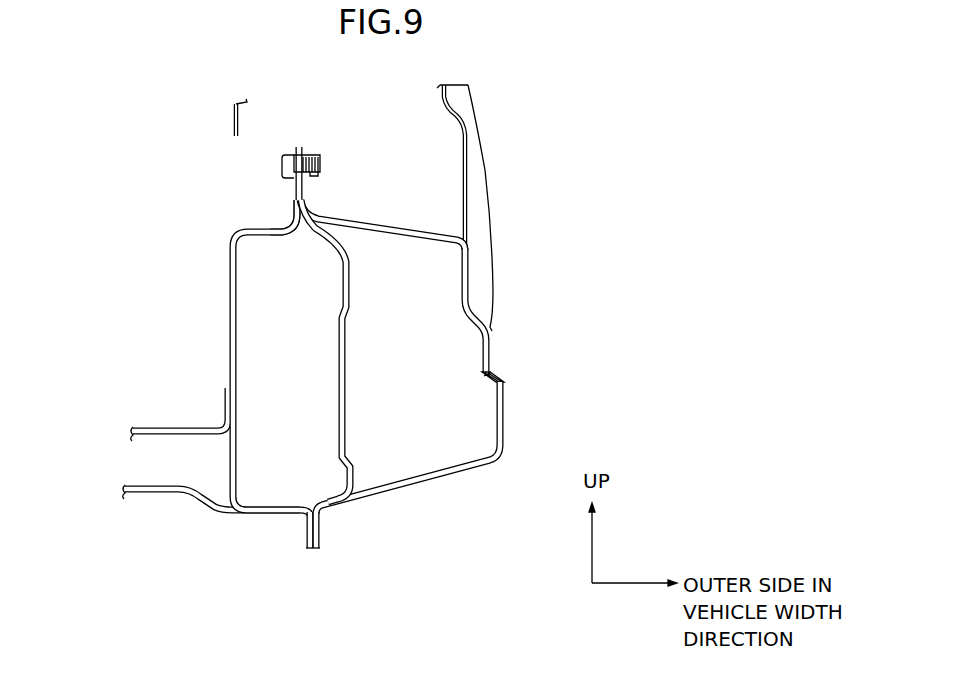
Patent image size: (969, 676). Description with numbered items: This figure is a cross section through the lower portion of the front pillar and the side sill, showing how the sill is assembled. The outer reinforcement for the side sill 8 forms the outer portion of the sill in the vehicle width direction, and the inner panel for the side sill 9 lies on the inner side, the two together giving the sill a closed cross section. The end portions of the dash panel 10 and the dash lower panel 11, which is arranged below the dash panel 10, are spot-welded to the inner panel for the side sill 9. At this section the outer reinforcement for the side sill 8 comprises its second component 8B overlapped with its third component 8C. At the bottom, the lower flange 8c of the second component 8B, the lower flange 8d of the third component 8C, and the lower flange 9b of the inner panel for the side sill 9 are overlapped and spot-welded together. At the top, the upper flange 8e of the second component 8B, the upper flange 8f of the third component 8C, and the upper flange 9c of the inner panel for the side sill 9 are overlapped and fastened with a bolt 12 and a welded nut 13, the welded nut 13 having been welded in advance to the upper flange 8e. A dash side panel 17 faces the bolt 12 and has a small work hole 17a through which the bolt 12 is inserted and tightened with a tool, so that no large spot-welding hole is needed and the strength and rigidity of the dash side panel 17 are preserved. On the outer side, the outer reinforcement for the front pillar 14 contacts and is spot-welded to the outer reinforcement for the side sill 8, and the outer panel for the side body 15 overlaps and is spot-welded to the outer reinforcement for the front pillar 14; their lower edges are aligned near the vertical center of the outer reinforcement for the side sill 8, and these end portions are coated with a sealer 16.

The outer reinforcement for the side sill 8 is at (423, 349).
The second component 8B is at (419, 233).
The third component 8C is at (353, 301).
The lower flange 8c is at (319, 537).
The lower flange 8d is at (312, 550).
The upper flange 8e is at (307, 188).
The upper flange 8f is at (299, 146).
The inner panel for the side sill 9 is at (246, 369).
The lower flange 9b is at (307, 537).
The upper flange 9c is at (295, 190).
The dash panel 10 is at (192, 430).
The dash lower panel 11 is at (184, 496).
The bolt 12 is at (282, 165).
The welded nut 13 is at (313, 157).
The outer reinforcement for the front pillar 14 is at (461, 150).
The outer panel for the side body 15 is at (488, 163).
The sealer 16 is at (500, 377).
The dash side panel 17 is at (231, 121).
The work hole 17a is at (237, 183).